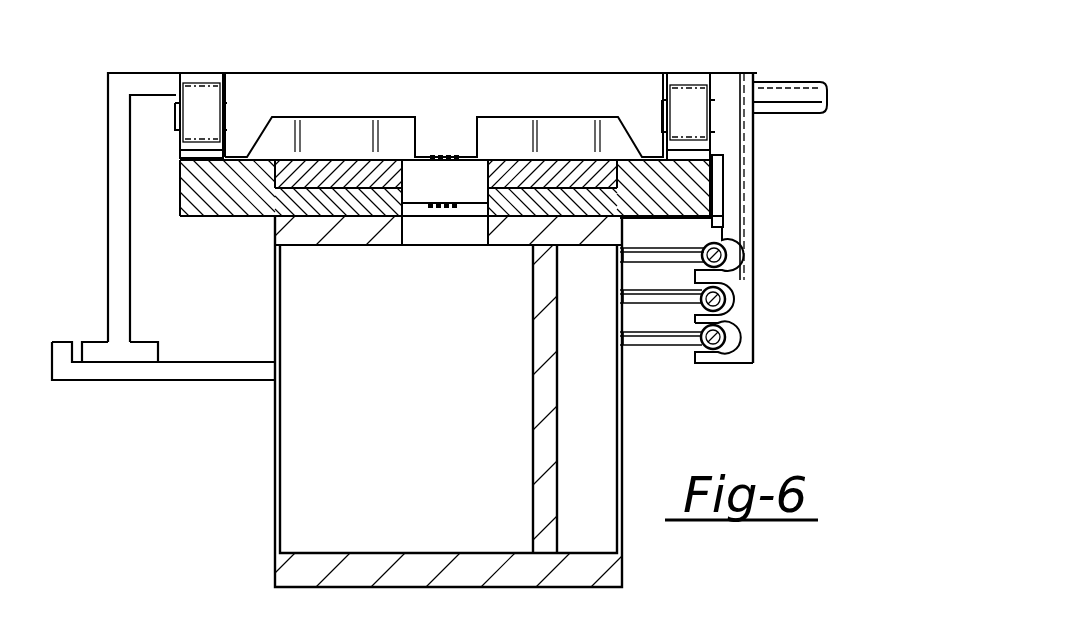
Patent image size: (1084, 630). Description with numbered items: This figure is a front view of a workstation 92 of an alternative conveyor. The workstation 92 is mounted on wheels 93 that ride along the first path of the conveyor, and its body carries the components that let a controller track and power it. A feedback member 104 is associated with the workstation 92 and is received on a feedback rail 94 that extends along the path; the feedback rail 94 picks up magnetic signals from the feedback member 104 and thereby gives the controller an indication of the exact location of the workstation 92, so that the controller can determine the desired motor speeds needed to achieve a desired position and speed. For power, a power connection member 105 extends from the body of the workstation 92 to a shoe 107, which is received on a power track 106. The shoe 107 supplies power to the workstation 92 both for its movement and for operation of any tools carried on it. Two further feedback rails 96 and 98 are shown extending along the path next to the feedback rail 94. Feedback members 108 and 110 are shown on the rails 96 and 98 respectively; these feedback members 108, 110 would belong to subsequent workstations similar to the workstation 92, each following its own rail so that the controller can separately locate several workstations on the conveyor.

The workstation 92 is at (340, 90).
The wheels 93 is at (197, 80).
The feedback rail 94 is at (705, 247).
The feedback rail 96 is at (700, 292).
The feedback rail 98 is at (697, 345).
The feedback member 104 is at (735, 183).
The power connection member 105 is at (108, 179).
The power track 106 is at (150, 382).
The shoe 107 is at (150, 352).
The feedback member 108 is at (743, 307).
The feedback member 110 is at (742, 345).